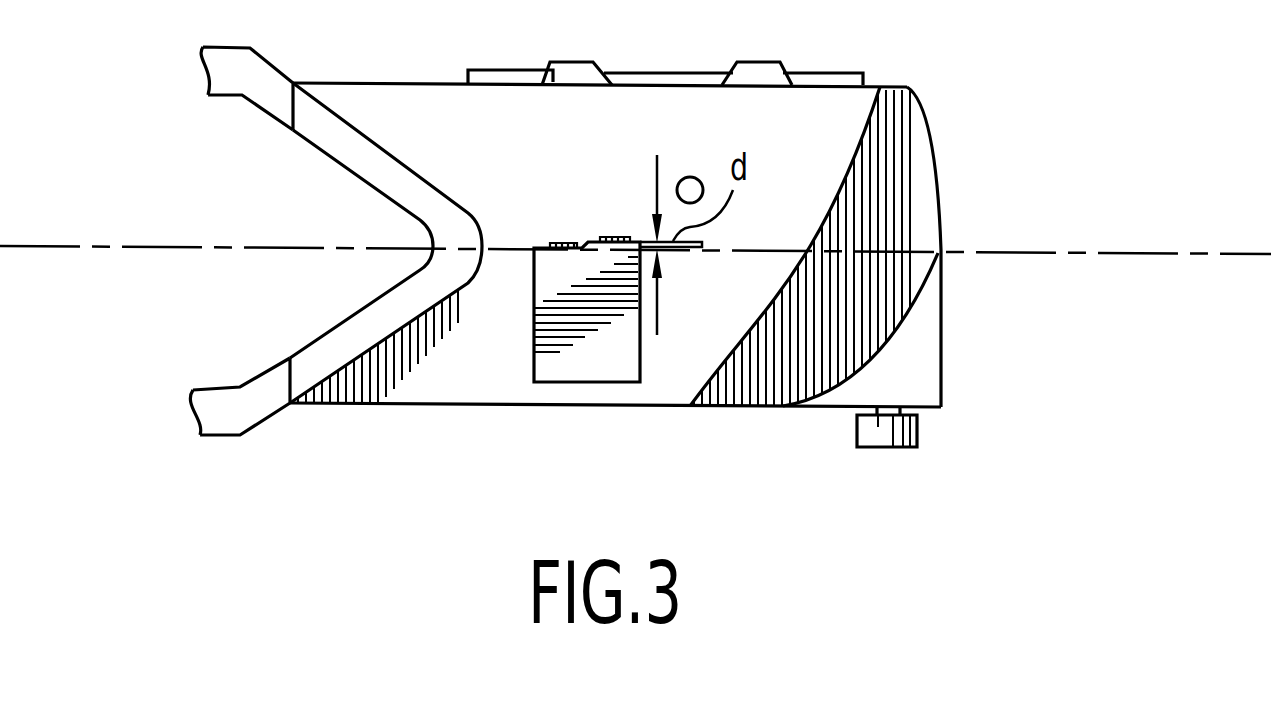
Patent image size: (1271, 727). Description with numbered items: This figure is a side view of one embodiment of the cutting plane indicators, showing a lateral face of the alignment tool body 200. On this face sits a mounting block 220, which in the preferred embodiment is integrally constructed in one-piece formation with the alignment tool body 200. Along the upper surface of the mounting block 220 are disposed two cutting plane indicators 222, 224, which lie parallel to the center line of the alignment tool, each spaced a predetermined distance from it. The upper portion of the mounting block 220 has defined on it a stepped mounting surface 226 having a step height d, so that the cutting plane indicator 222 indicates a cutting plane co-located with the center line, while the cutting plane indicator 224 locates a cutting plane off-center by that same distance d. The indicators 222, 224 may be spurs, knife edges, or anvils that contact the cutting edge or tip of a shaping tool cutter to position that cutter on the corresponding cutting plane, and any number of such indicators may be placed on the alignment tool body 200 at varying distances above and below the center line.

The alignment tool body 200 is at (890, 315).
The mounting block 220 is at (587, 357).
The cutting plane indicator 222 is at (555, 243).
The cutting plane indicator 224 is at (617, 237).
The stepped mounting surface 226 is at (588, 242).